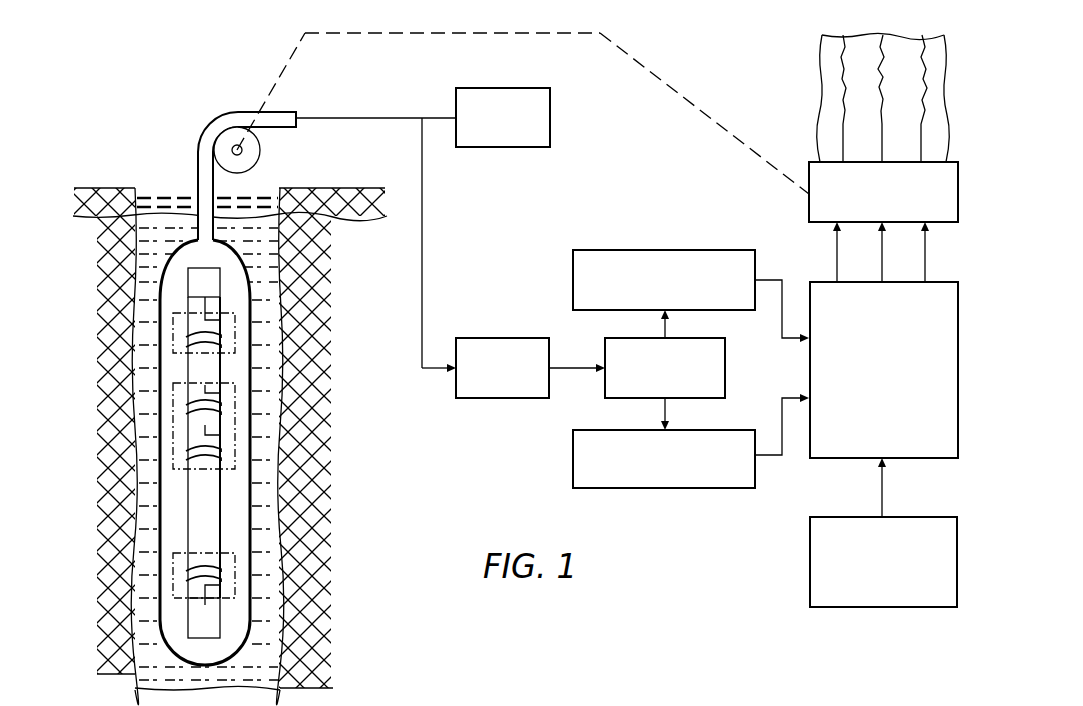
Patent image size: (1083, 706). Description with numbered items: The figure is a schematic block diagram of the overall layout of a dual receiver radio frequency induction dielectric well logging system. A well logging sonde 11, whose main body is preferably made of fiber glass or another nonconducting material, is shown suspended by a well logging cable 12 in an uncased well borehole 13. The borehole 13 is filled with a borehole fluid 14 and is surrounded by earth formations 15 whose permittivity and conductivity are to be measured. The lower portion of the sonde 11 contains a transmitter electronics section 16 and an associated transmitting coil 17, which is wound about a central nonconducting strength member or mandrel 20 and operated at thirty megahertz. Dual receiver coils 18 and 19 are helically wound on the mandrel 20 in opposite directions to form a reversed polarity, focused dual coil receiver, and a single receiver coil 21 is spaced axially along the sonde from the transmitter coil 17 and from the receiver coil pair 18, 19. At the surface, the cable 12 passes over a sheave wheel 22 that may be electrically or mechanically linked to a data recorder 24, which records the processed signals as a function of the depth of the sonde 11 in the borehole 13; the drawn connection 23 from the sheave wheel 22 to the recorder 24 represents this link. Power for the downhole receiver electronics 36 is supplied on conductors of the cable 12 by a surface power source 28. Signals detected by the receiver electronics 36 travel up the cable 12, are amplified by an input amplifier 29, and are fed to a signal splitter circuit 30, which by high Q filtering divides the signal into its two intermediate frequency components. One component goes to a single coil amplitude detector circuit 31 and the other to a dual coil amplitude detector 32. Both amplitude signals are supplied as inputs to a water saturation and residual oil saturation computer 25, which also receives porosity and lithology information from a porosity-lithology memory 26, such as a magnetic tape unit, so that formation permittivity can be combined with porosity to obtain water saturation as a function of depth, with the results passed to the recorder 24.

The well logging sonde 11 is at (250, 368).
The well logging cable 12 is at (198, 157).
The well borehole 13 is at (160, 190).
The borehole fluid 14 is at (270, 252).
The earth formations 15 is at (352, 554).
The transmitter electronics section 16 is at (213, 634).
The transmitting coil 17 is at (221, 578).
The dual receiver coil 18 is at (221, 408).
The dual receiver coil 19 is at (221, 452).
The mandrel 20 is at (223, 519).
The single receiver coil 21 is at (221, 340).
The sheave wheel 22 is at (261, 158).
The logging cable to recorder 23 is at (675, 93).
The data recorder 24 is at (808, 167).
The water saturation and residual oil saturation computer 25 is at (815, 282).
The porosity-lithology memory 26 is at (824, 517).
The surface power source 28 is at (507, 87).
The input amplifier 29 is at (507, 338).
The signal splitter circuit 30 is at (727, 367).
The single coil amplitude detector circuit 31 is at (638, 250).
The dual coil amplitude detector 32 is at (717, 430).
The receiver electronics 36 is at (213, 291).